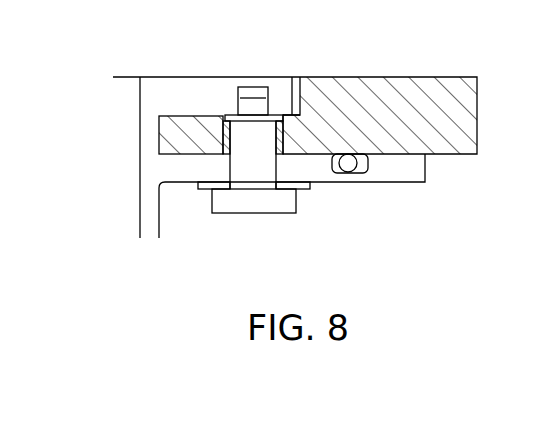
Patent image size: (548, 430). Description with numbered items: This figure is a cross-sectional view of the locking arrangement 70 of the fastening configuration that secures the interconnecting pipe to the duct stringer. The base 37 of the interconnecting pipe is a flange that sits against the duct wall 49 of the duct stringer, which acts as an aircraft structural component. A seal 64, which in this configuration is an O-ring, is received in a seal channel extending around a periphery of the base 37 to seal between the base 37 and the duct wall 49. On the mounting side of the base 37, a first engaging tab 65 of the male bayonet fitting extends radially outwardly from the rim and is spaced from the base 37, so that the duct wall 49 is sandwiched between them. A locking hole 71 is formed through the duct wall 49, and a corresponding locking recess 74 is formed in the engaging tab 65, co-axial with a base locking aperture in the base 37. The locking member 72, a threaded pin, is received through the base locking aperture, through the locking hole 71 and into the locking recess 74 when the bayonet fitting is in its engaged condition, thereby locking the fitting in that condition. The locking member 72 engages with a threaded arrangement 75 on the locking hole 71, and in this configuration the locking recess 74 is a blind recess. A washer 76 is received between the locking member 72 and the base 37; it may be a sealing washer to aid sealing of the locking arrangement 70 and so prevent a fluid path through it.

The base 37 is at (393, 172).
The duct wall 49 is at (168, 140).
The seal 64 is at (348, 160).
The first engaging tab 65 is at (165, 90).
The locking arrangement 70 is at (110, 194).
The locking hole 71 is at (223, 137).
The locking member 72 is at (253, 202).
The locking recess 74 is at (252, 86).
The threaded arrangement 75 is at (284, 140).
The washer 76 is at (298, 188).